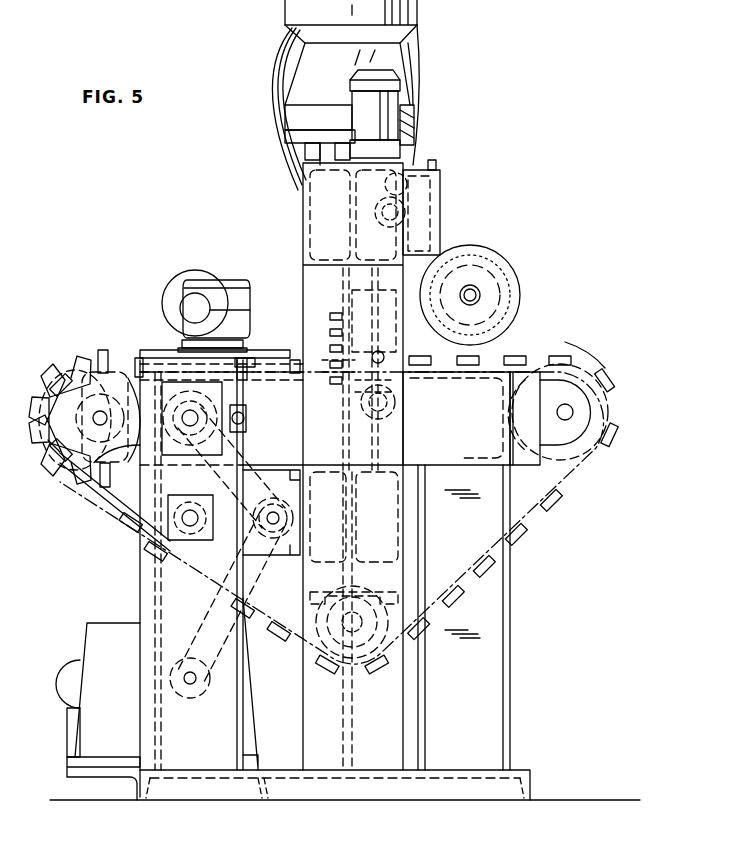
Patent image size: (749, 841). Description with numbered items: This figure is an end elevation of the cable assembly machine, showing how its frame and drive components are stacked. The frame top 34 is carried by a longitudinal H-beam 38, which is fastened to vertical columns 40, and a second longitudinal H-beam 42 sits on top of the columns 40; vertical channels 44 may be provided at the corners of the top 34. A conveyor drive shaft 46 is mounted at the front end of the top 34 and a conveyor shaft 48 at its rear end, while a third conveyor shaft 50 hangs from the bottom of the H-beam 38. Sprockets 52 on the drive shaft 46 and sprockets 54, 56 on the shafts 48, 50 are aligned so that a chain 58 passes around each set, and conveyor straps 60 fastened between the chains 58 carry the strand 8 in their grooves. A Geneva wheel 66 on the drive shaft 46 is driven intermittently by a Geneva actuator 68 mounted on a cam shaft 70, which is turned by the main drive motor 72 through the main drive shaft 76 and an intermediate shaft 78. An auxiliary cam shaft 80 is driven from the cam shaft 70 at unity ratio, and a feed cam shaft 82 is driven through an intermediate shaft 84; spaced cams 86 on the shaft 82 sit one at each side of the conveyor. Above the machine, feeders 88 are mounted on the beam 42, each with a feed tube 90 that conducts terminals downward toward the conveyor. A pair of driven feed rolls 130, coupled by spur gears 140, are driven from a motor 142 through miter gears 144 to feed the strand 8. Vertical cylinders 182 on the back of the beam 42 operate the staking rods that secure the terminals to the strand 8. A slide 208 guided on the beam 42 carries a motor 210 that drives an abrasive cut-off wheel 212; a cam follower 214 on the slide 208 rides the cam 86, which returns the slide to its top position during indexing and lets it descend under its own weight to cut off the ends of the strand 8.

The strand 8 is at (386, 368).
The top 34 is at (442, 372).
The longitudinal H-beam 38 is at (348, 548).
The vertical columns 40 is at (305, 697).
The second longitudinal H-beam 42 is at (322, 258).
The vertical channels 44 is at (160, 592).
The conveyor drive shaft 46 is at (93, 416).
The conveyor shaft 48 is at (565, 404).
The third conveyor shaft 50 is at (358, 608).
The sprockets 52 is at (72, 368).
The sprockets 54 is at (600, 414).
The sprockets 56 is at (368, 662).
The chain 58 is at (122, 502).
The conveyor straps 60 is at (132, 356).
The Geneva wheel 66 is at (44, 413).
The Geneva actuator 68 is at (246, 419).
The cam shaft 70 is at (190, 428).
The main drive motor 72 is at (80, 663).
The main drive shaft 76 is at (190, 688).
The intermediate shaft 78 is at (272, 528).
The auxiliary cam shaft 80 is at (190, 528).
The feed cam shaft 82 is at (348, 210).
The intermediate shaft 84 is at (378, 423).
The cams 86 is at (440, 210).
The feeders 88 is at (417, 16).
The feed tube 90 is at (266, 120).
The feed rolls 130 is at (398, 348).
The spur gears 140 is at (322, 315).
The motor 142 is at (196, 282).
The miter gears 144 is at (252, 368).
The vertical cylinders 182 is at (398, 126).
The slide 208 is at (442, 190).
The motor 210 is at (520, 300).
The abrasive cut-off wheel 212 is at (508, 275).
The cam follower 214 is at (398, 180).